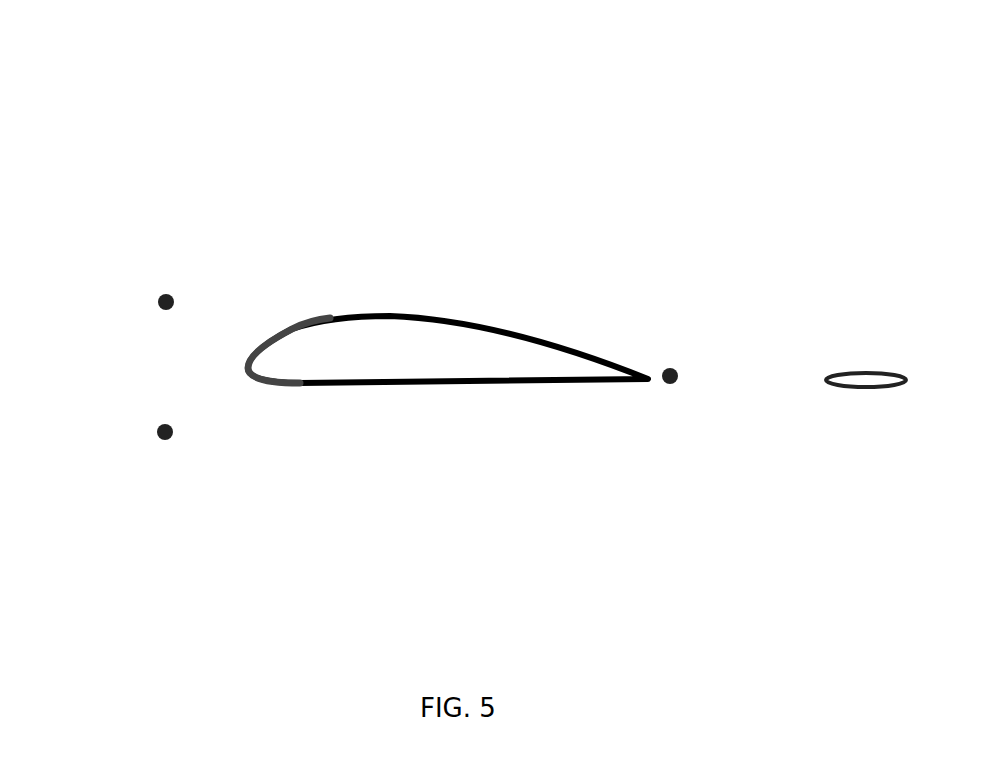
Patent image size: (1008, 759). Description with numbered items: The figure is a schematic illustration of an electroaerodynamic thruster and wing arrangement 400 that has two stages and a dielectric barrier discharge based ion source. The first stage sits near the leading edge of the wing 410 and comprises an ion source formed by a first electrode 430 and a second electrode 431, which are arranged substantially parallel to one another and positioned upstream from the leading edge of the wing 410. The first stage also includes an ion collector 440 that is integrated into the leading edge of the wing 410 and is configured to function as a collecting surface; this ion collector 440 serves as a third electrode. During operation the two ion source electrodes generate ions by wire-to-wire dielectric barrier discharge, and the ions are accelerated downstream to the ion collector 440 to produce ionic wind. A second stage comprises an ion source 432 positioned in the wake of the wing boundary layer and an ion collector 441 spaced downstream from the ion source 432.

The thruster and wing arrangement 400 is at (212, 233).
The wing 410 is at (489, 332).
The first electrode 430 is at (162, 295).
The second electrode 431 is at (162, 438).
The ion source 432 is at (669, 368).
The ion collector 440 is at (277, 344).
The ion collector 441 is at (856, 372).